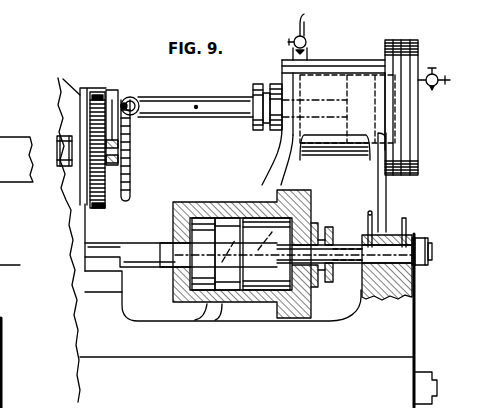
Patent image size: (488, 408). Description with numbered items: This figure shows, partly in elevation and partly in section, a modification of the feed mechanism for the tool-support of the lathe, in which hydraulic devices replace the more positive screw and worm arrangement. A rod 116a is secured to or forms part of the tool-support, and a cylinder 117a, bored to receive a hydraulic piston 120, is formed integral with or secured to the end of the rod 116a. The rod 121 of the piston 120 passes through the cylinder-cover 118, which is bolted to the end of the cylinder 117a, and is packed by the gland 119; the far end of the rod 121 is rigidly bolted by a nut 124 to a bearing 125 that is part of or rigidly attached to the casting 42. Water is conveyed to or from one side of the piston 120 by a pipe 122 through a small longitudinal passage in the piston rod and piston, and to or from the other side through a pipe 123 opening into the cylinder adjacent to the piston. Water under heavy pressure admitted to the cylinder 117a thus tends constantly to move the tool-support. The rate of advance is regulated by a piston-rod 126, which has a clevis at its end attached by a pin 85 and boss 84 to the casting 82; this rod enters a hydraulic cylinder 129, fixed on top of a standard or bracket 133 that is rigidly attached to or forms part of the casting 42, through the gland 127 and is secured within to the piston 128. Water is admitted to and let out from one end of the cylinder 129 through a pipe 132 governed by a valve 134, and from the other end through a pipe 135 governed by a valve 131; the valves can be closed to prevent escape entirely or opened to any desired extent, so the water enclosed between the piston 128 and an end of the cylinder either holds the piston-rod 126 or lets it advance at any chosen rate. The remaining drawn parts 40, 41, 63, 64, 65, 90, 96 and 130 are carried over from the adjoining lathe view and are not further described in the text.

The foundation block 40 is at (433, 380).
The base plate 41 is at (397, 320).
The casting 42 is at (247, 314).
The bearing bracket 63 is at (83, 92).
The vertical gear 64 is at (97, 92).
The bearing 65 is at (106, 208).
The casting 82 is at (112, 92).
The boss 84 is at (128, 97).
The pin 85 is at (132, 112).
The wall 90 is at (60, 82).
The connecting link 96 is at (130, 179).
The rod 116a is at (153, 244).
The cylinder 117a is at (222, 201).
The cylinder-cover 118 is at (305, 205).
The gland 119 is at (333, 237).
The hydraulic piston 120 is at (241, 254).
The rod 121 is at (343, 266).
The pipe 122 is at (404, 222).
The pipe 123 is at (369, 220).
The nut 124 is at (422, 237).
The bearing 125 is at (412, 291).
The piston-rod 126 is at (198, 97).
The gland 127 is at (258, 84).
The piston 128 is at (338, 109).
The hydraulic cylinder 129 is at (332, 68).
The cylinder head 130 is at (410, 146).
The valve 131 is at (432, 72).
The pipe 132 is at (304, 20).
The standard or bracket 133 is at (392, 191).
The valve 134 is at (292, 40).
The pipe 135 is at (436, 86).